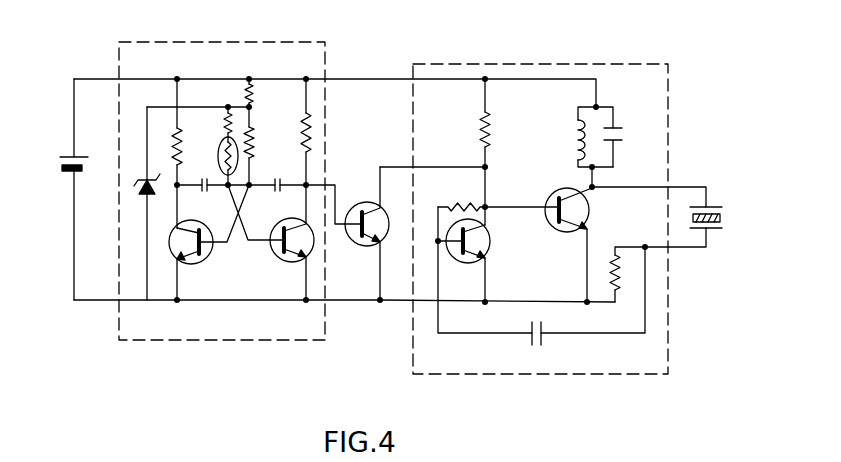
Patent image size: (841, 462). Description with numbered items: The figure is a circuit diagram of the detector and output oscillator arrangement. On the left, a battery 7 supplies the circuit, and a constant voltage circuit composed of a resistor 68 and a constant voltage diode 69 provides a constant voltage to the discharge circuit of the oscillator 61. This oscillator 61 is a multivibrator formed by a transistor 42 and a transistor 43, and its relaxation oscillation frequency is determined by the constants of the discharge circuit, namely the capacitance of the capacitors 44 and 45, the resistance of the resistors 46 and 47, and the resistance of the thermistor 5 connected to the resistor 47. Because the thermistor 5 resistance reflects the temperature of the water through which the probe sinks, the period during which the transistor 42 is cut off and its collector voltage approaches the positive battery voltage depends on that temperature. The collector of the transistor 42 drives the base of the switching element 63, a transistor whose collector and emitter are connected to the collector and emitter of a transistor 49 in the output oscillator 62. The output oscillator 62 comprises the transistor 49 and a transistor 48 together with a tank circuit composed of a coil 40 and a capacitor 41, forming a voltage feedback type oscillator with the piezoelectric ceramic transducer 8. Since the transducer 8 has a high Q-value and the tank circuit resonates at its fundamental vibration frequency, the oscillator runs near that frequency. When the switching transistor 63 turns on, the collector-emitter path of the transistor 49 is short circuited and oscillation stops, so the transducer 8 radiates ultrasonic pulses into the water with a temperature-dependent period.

The battery 7 is at (62, 157).
The constant voltage diode 69 is at (140, 190).
The oscillator 61 is at (253, 42).
The resistor 68 is at (252, 95).
The resistor 47 is at (228, 115).
The thermistor 5 is at (220, 150).
The resistor 46 is at (253, 140).
The capacitor 44 is at (277, 182).
The capacitor 45 is at (194, 193).
The transistor 43 is at (190, 266).
The transistor 42 is at (292, 264).
The switching element 63 is at (365, 202).
The output oscillator 62 is at (636, 63).
The coil 40 is at (573, 147).
The capacitor 41 is at (621, 133).
The transistor 48 is at (582, 229).
The transistor 49 is at (487, 246).
The piezoelectric ceramic transducer 8 is at (713, 207).